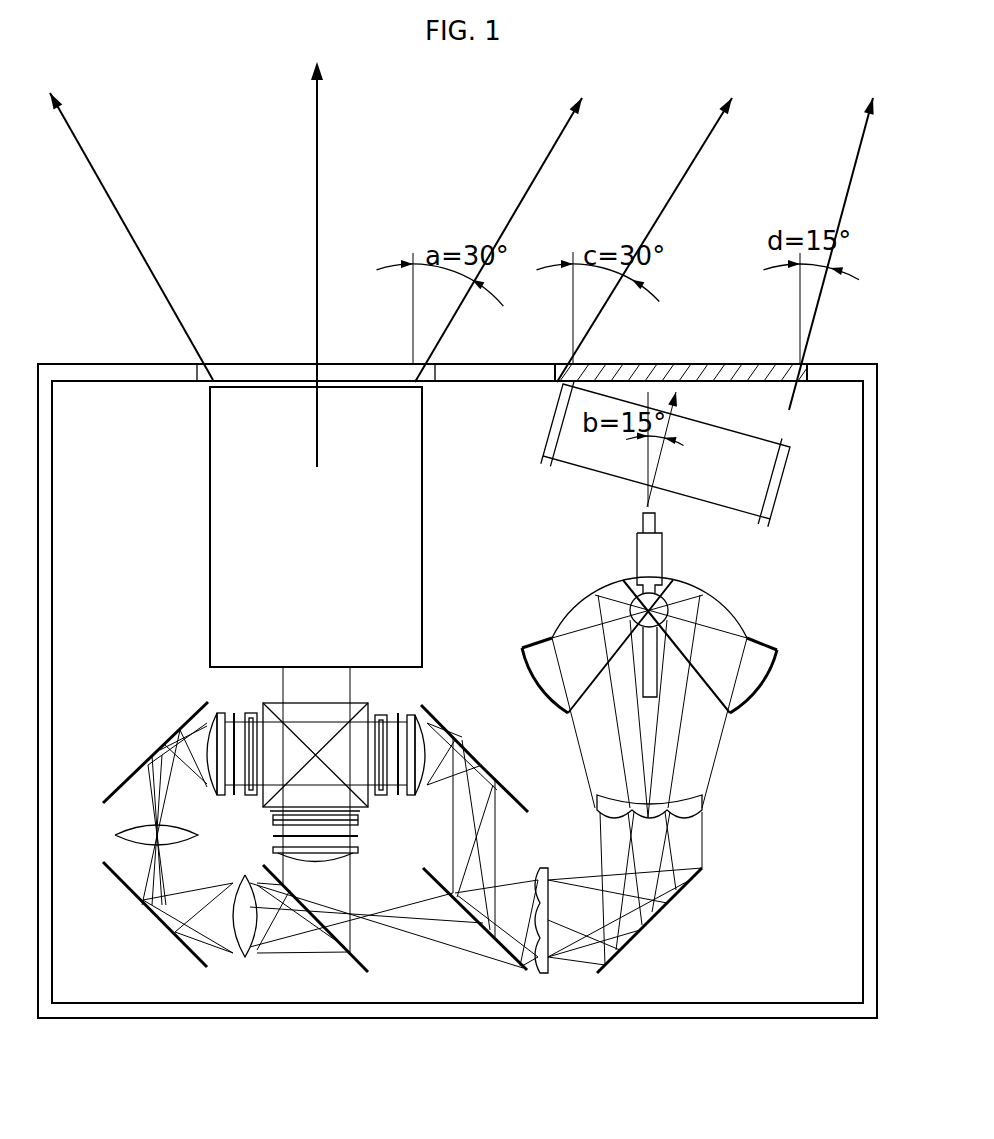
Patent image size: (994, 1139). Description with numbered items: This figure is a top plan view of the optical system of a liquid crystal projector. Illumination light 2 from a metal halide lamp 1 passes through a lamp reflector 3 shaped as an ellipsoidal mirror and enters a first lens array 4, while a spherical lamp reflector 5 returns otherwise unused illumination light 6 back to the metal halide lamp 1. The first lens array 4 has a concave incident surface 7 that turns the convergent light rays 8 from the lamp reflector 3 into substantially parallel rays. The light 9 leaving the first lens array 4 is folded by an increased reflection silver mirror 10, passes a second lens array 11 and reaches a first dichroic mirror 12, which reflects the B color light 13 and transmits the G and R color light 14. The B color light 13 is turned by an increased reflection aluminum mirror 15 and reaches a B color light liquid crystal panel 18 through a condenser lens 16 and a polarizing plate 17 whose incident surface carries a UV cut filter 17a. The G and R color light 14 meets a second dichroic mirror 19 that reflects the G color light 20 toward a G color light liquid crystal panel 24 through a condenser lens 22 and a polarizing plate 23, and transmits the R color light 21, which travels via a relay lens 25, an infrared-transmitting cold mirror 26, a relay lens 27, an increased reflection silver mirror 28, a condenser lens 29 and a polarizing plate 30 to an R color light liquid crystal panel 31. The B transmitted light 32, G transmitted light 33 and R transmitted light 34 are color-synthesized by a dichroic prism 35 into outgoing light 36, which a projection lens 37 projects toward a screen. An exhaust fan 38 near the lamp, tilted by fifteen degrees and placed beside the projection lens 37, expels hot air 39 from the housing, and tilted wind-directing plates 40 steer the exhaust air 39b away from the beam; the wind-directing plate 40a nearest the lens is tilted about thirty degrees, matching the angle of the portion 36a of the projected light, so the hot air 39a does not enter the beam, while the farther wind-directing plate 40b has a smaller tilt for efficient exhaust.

The metal halide lamp 1 is at (680, 580).
The illumination light 2 is at (612, 580).
The lamp reflector 3 is at (720, 607).
The first lens array 4 is at (712, 793).
The lamp reflector 5 is at (763, 683).
The illumination light 6 is at (588, 693).
The incident surface 7 is at (685, 800).
The convergent light rays 8 is at (577, 757).
The light 9 is at (702, 842).
The increased reflection silver mirror 10 is at (687, 887).
The second lens array 11 is at (553, 967).
The first dichroic mirror 12 is at (523, 970).
The B color light 13 is at (517, 819).
The G and R color light 14 is at (423, 943).
The increased reflection aluminum mirror 15 is at (477, 760).
The condenser lens 16 is at (417, 717).
The polarizing plate 17 is at (398, 712).
The UV cut filter 17a is at (408, 715).
The B color light liquid crystal panel 18 is at (380, 713).
The second dichroic mirror 19 is at (357, 962).
The G color light 20 is at (350, 877).
The R color light 21 is at (283, 950).
The condenser lens 22 is at (360, 848).
The polarizing plate 23 is at (272, 838).
The G color light liquid crystal panel 24 is at (360, 820).
The relay lens 25 is at (238, 958).
The cold mirror 26 is at (152, 918).
The relay lens 27 is at (115, 835).
The increased reflection silver mirror 28 is at (155, 752).
The condenser lens 29 is at (210, 712).
The polarizing plate 30 is at (222, 712).
The R color light liquid crystal panel 31 is at (233, 713).
The B transmitted light 32 is at (367, 715).
The G transmitted light 33 is at (272, 810).
The R transmitted light 34 is at (253, 710).
The dichroic prism 35 is at (292, 702).
The outgoing light 36 is at (317, 118).
The portion of the projected light 36a is at (547, 157).
The projection lens 37 is at (210, 508).
The exhaust fan 38 is at (778, 488).
The hot air 39 is at (678, 402).
The hot air 39a is at (689, 157).
The exhaust air 39b is at (855, 158).
The wind-directing plates 40 is at (690, 364).
The wind-directing plate 40a is at (565, 364).
The wind-directing plate 40b is at (812, 364).